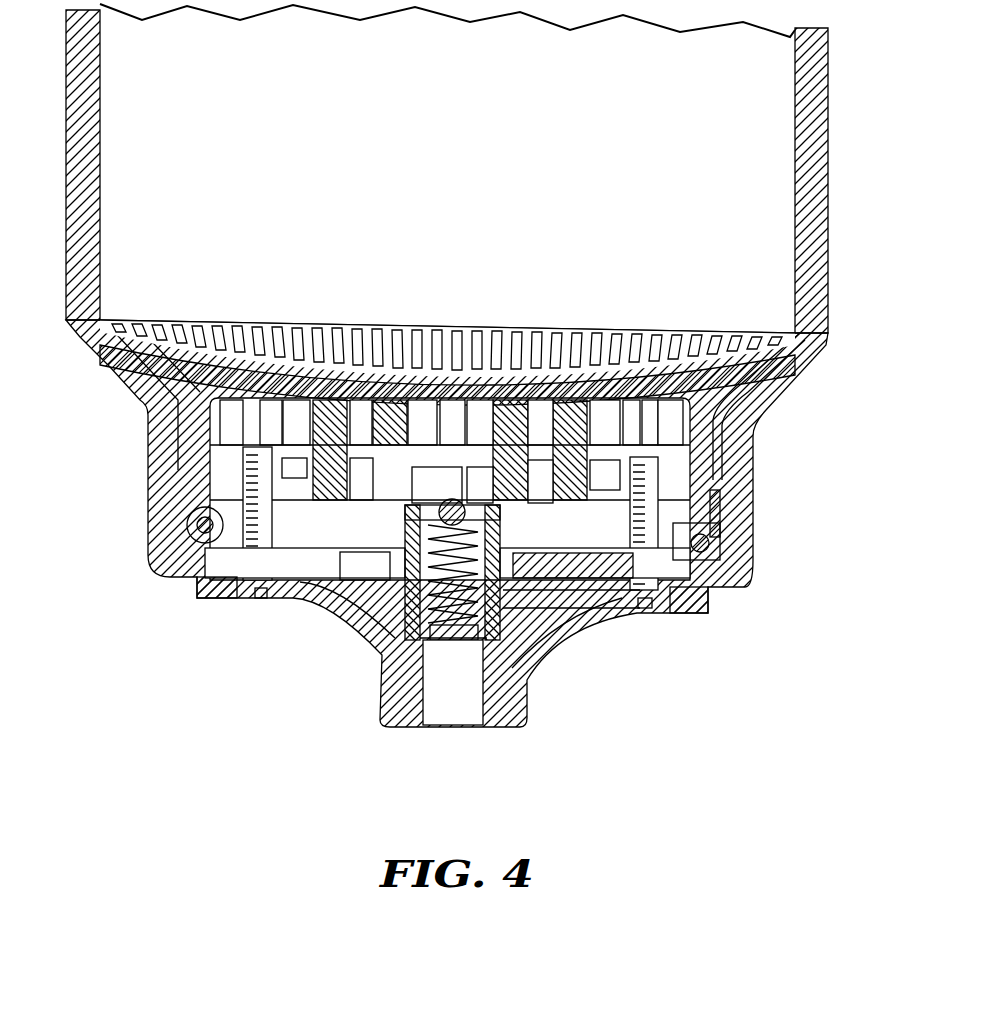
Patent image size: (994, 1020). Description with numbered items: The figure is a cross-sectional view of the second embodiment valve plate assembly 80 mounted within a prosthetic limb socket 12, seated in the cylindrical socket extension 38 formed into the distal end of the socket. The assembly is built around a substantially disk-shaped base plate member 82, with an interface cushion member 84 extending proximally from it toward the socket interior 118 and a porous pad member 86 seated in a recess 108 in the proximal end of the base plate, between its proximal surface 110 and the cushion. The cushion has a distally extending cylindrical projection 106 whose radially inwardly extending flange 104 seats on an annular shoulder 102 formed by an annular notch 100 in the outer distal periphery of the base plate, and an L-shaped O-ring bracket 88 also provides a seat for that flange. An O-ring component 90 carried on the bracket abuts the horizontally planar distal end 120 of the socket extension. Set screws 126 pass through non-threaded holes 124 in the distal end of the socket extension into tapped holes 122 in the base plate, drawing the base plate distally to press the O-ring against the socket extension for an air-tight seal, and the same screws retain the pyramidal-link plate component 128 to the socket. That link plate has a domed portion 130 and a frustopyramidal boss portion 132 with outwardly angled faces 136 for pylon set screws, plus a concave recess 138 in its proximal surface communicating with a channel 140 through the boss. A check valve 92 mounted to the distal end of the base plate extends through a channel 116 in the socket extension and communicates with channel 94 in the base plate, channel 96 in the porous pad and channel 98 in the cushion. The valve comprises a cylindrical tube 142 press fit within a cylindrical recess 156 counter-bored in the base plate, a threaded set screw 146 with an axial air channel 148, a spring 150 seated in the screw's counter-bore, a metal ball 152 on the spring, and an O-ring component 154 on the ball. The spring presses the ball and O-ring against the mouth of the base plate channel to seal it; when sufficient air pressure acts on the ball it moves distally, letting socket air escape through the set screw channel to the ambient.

The prosthetic limb socket 12 is at (820, 160).
The cylindrical socket extension 38 is at (757, 478).
The valve plate assembly 80 is at (160, 470).
The base plate member 82 is at (292, 590).
The interface cushion member 84 is at (178, 386).
The porous pad member 86 is at (325, 403).
The O-ring bracket 88 is at (720, 505).
The O-ring component 90 is at (712, 560).
The check valve 92 is at (318, 612).
The channel 94 is at (480, 487).
The channel 96 is at (479, 422).
The channel 98 is at (458, 395).
The annular notch 100 is at (215, 575).
The annular shoulder 102 is at (678, 614).
The radially inwardly extending flange 104 is at (187, 520).
The cylindrical projection 106 is at (197, 452).
The recess 108 is at (545, 500).
The proximal surface 110 is at (240, 408).
The channel 116 is at (540, 640).
The socket interior 118 is at (476, 128).
The distal end 120 is at (230, 602).
The tapped holes 122 is at (727, 440).
The non-threaded holes 124 is at (265, 600).
The set screws 126 is at (240, 605).
The pyramidal-link plate component 128 is at (380, 718).
The domed portion 130 is at (332, 640).
The frustopyramidal boss portion 132 is at (520, 728).
The outwardly angled faces 136 is at (382, 690).
The concave recess 138 is at (560, 600).
The channel 140 is at (475, 700).
The cylindrical tube 142 is at (500, 525).
The threaded set screw 146 is at (453, 682).
The air channel 148 is at (440, 605).
The spring 150 is at (305, 563).
The metal ball 152 is at (410, 530).
The O-ring component 154 is at (437, 486).
The cylindrical recess 156 is at (560, 541).